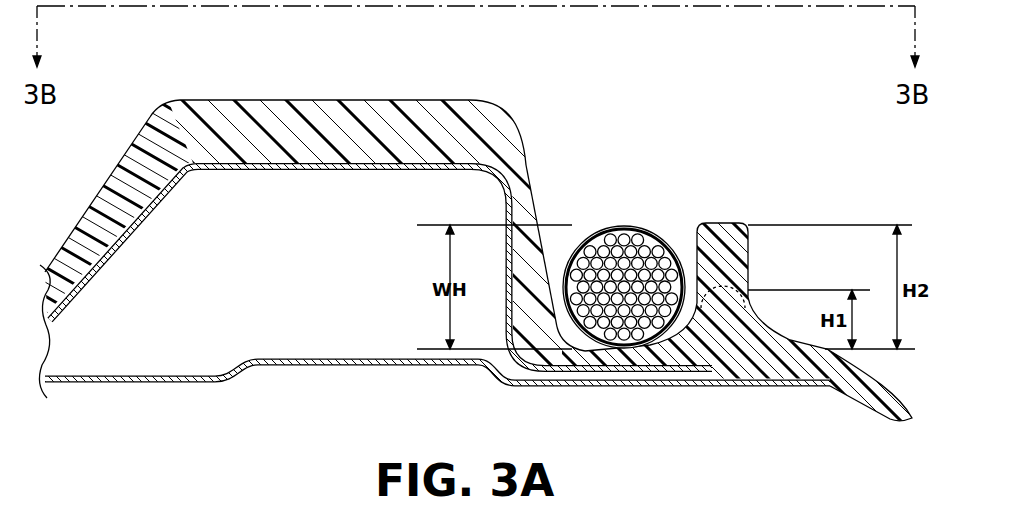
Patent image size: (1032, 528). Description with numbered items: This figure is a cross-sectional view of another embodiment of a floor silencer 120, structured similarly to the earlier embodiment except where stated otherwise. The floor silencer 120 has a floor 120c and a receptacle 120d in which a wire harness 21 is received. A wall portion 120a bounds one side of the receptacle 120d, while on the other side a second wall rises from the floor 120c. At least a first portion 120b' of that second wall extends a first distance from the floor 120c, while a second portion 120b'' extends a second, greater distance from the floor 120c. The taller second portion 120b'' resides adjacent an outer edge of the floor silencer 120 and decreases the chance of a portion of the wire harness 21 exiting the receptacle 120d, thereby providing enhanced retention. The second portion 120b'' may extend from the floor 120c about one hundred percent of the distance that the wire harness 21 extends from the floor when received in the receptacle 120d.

The floor silencer 120 is at (371, 95).
The side wall portion of rubber member 120a is at (540, 207).
The first portion of the second wall 120b' is at (757, 274).
The second portion of the second wall 120b'' is at (756, 229).
The floor 120c is at (628, 355).
The receptacle 120d is at (540, 340).
The wire harness 21 is at (634, 225).